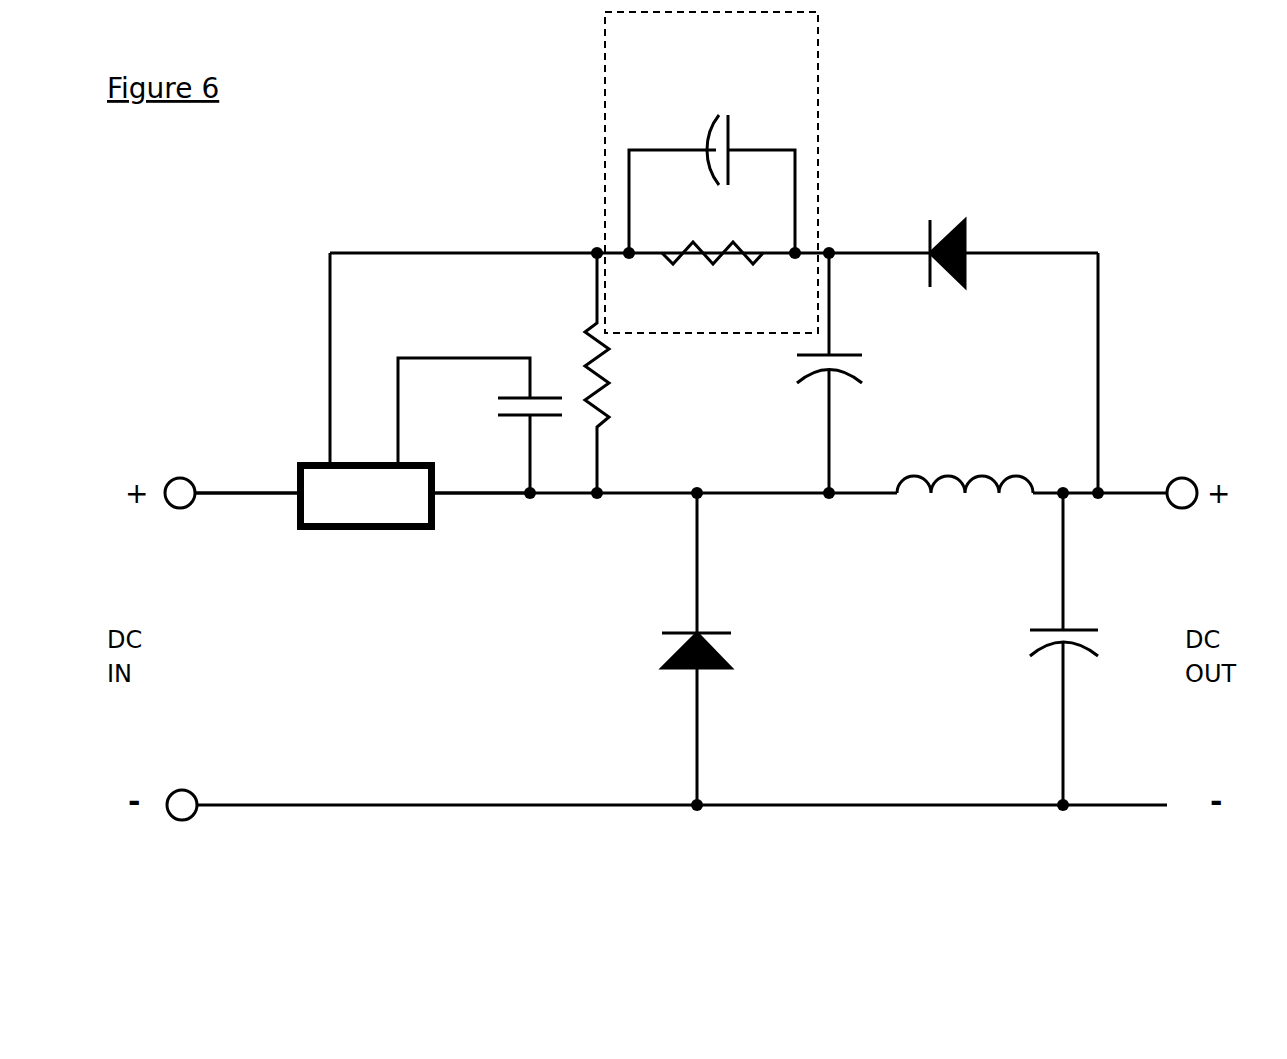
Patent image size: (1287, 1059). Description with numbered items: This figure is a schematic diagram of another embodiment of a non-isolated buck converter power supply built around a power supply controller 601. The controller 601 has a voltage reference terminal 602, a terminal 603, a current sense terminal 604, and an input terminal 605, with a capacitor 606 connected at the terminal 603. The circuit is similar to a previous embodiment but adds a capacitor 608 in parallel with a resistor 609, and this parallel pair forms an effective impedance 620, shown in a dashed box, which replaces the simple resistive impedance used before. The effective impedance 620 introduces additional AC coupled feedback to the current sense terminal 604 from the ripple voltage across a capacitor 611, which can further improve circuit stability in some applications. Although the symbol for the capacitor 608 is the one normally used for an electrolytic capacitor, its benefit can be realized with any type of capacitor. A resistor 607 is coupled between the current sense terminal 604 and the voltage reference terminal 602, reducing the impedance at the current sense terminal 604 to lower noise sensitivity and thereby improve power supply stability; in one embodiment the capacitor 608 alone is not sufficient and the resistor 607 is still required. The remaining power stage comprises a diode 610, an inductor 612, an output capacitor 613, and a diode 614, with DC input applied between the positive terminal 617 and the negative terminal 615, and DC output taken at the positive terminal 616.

The switching regulator / control circuit 601 is at (370, 537).
The voltage reference terminal 602 is at (446, 498).
The feedback terminal connection 603 is at (400, 445).
The current sense terminal 604 is at (327, 440).
The input terminal connection 605 is at (285, 499).
The capacitor 606 is at (517, 375).
The resistor 607 is at (617, 390).
The capacitor 608 is at (735, 100).
The resistor 609 is at (737, 257).
The diode 610 is at (944, 215).
The capacitor 611 is at (875, 367).
The inductor 612 is at (980, 463).
The output capacitor 613 is at (1013, 639).
The diode 614 is at (658, 657).
The DC input negative terminal 615 is at (190, 790).
The DC output positive terminal 616 is at (1186, 466).
The DC input positive terminal 617 is at (182, 477).
The effective impedance 620 is at (781, 174).